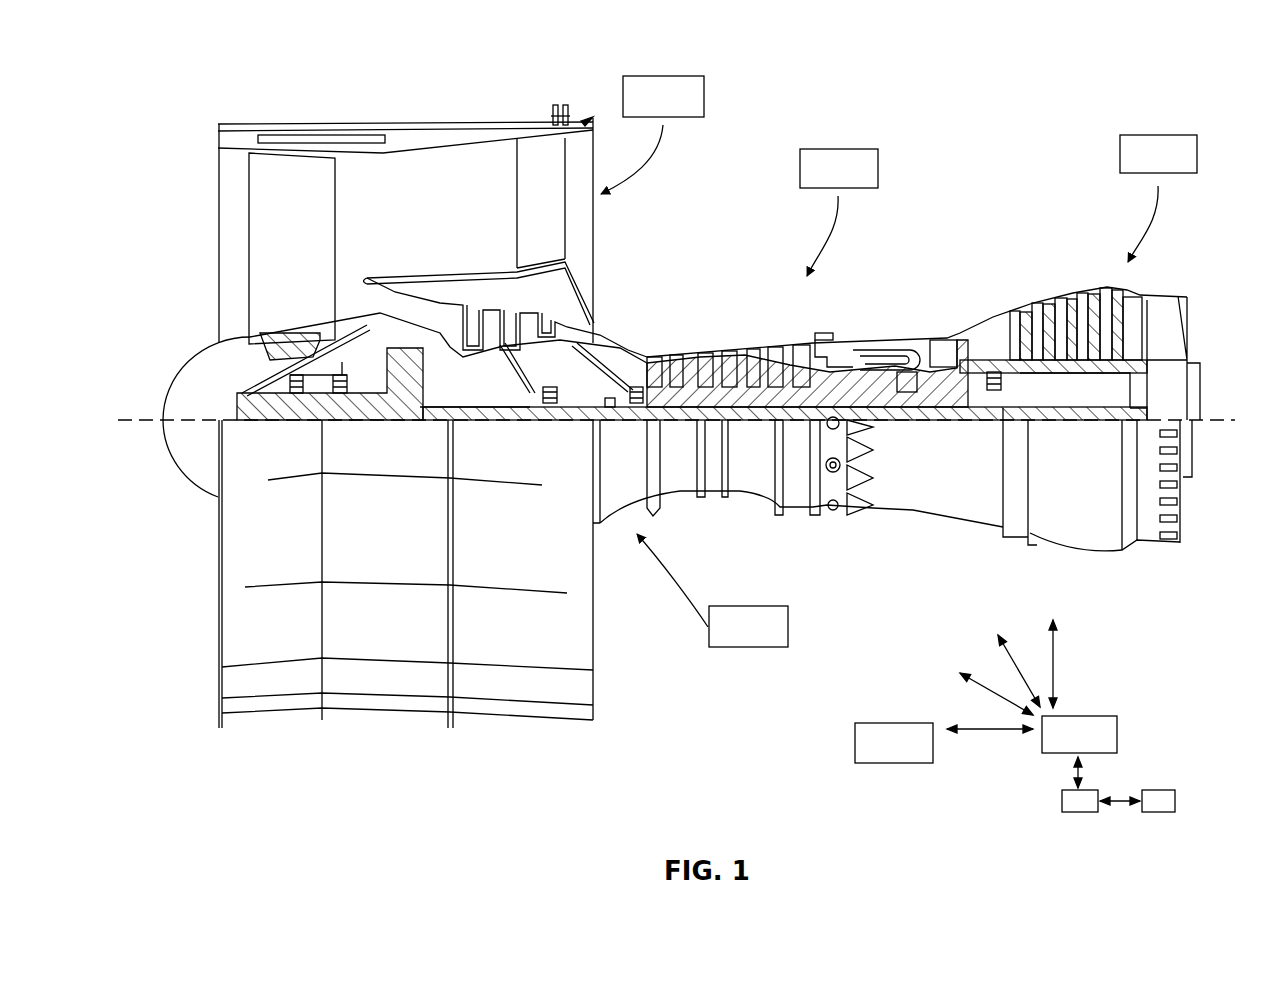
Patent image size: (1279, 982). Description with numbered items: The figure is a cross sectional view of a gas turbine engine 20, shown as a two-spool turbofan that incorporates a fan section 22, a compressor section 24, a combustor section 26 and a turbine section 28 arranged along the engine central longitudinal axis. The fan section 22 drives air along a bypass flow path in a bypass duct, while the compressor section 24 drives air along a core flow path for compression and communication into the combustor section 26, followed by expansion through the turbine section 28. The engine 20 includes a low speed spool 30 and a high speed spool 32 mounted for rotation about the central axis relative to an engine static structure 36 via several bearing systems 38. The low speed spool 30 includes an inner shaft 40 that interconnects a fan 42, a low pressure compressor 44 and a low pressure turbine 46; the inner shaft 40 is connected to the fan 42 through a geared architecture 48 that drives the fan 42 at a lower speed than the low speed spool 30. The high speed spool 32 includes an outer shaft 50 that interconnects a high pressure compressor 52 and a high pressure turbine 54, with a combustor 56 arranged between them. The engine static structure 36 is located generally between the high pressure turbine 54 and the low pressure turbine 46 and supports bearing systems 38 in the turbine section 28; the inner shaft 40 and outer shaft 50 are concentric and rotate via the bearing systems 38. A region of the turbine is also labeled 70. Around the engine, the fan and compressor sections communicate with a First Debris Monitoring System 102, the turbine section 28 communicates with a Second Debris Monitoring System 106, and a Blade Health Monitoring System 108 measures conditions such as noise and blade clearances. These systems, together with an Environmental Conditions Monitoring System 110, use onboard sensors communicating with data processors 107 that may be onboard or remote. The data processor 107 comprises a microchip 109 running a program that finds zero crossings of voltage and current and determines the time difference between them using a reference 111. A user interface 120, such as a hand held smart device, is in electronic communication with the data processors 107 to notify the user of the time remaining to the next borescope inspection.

The gas turbine engine 20 is at (993, 147).
The fan section 22 is at (404, 163).
The compressor section 24 is at (629, 242).
The combustor section 26 is at (917, 298).
The turbine section 28 is at (1028, 252).
The low speed spool 30 is at (763, 428).
The high speed spool 32 is at (807, 364).
The engine static structure 36 is at (797, 518).
The bearing systems 38 is at (300, 406).
The inner shaft 40 is at (612, 418).
The fan 42 is at (299, 249).
The low pressure compressor 44 is at (527, 317).
The low pressure turbine 46 is at (1070, 309).
The geared architecture 48 is at (407, 406).
The outer shaft 50 is at (899, 418).
The high pressure compressor 52 is at (713, 389).
The high pressure turbine 54 is at (944, 333).
The combustor 56 is at (868, 357).
The turbine rotor 70 is at (1100, 374).
The First Debris Monitoring System 102 is at (699, 77).
The Second Debris Monitoring System 106 is at (1197, 136).
The data processor 107 is at (1117, 716).
The Blade Health Monitoring System 108 is at (870, 149).
The microchip 109 is at (1070, 790).
The Environmental Conditions Monitoring System 110 is at (718, 648).
The reference 111 is at (1173, 790).
The user interface 120 is at (869, 722).